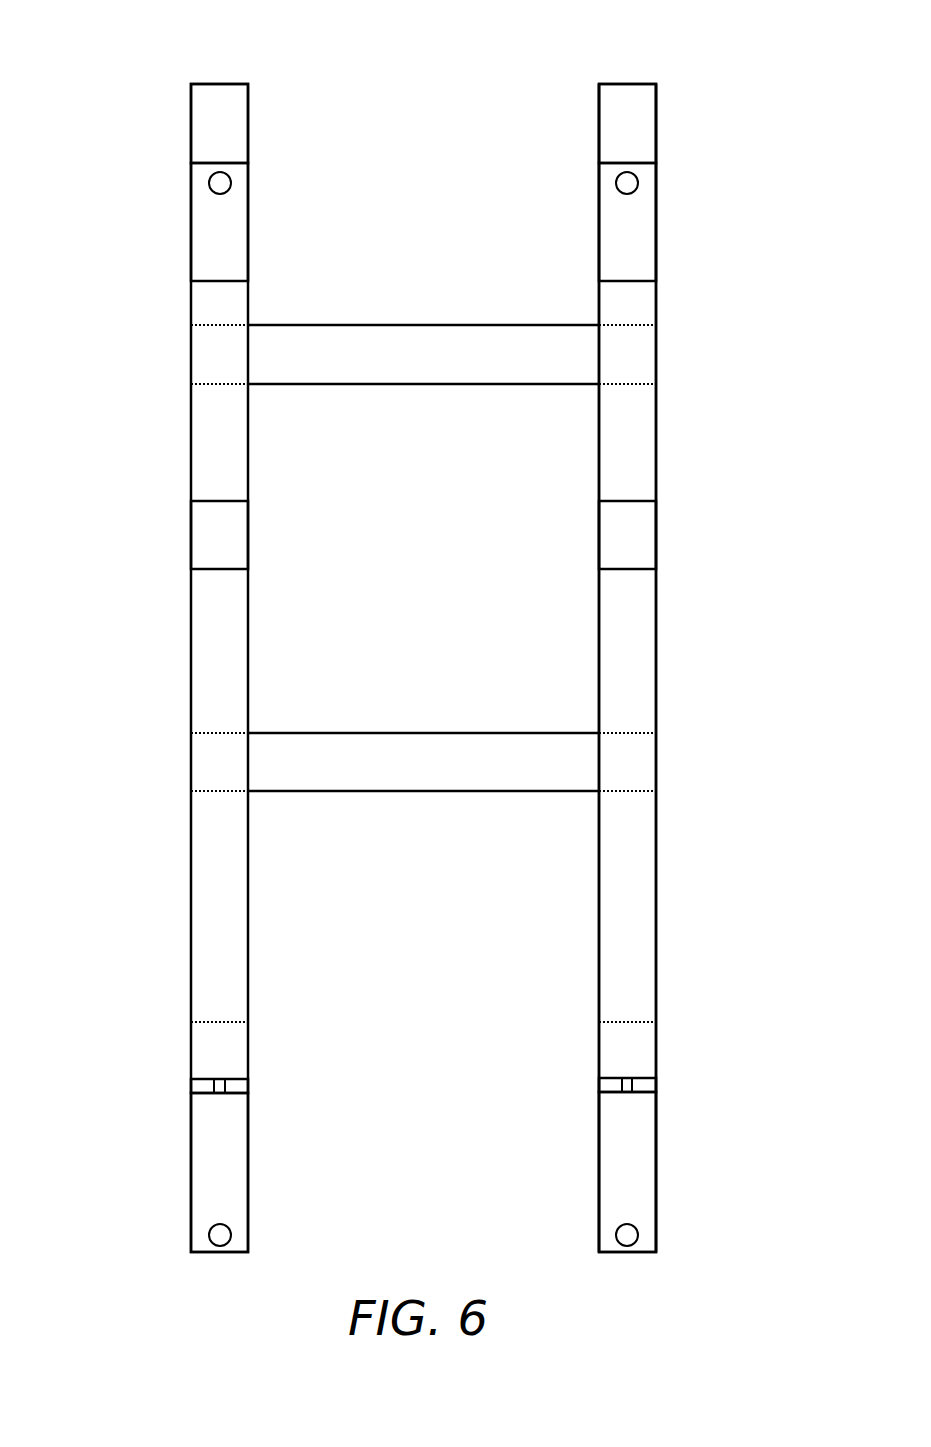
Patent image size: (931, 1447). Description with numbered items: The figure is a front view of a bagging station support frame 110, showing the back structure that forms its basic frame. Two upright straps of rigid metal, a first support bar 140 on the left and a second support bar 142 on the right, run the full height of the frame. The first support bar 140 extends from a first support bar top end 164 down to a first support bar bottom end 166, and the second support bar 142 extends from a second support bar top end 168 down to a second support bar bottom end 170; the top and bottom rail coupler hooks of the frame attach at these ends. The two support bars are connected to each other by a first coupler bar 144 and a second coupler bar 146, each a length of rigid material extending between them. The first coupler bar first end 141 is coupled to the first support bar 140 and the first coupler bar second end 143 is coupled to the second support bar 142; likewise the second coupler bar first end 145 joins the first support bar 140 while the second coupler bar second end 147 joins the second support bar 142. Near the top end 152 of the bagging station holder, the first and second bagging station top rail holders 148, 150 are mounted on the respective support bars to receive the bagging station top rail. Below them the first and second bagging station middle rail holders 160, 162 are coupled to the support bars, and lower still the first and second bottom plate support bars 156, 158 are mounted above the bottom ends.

The bagging station support frame 110 is at (449, 80).
The first support bar 140 is at (200, 707).
The second support bar 142 is at (648, 703).
The top end 152 is at (687, 181).
The first support bar top end 164 is at (200, 115).
The second support bar top end 168 is at (648, 124).
The first bagging station top rail holder 148 is at (200, 215).
The second bagging station top rail holder 150 is at (648, 216).
The first coupler bar 144 is at (418, 335).
The first coupler bar first end 141 is at (207, 351).
The first coupler bar second end 143 is at (643, 351).
The first bagging station middle rail holder 160 is at (200, 532).
The second bagging station middle rail holder 162 is at (648, 536).
The second coupler bar 146 is at (418, 744).
The second coupler bar first end 145 is at (208, 772).
The second coupler bar second end 147 is at (638, 775).
The first bottom plate support bar 156 is at (200, 1086).
The second bottom plate support bar 158 is at (648, 1086).
The first support bar bottom end 166 is at (198, 1245).
The second support bar bottom end 170 is at (647, 1245).